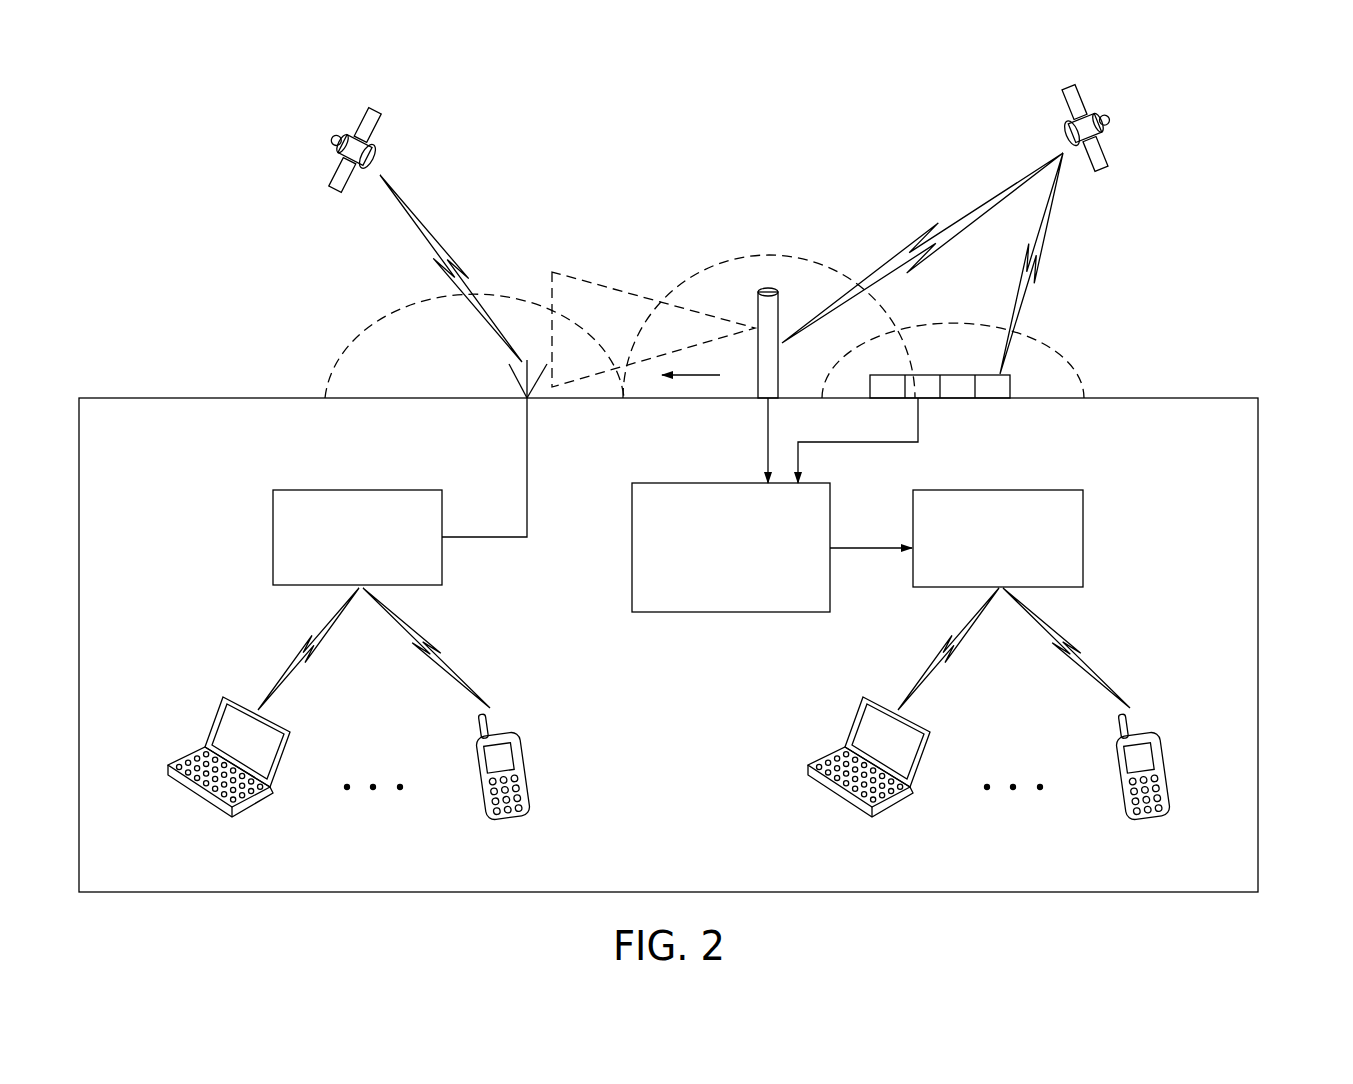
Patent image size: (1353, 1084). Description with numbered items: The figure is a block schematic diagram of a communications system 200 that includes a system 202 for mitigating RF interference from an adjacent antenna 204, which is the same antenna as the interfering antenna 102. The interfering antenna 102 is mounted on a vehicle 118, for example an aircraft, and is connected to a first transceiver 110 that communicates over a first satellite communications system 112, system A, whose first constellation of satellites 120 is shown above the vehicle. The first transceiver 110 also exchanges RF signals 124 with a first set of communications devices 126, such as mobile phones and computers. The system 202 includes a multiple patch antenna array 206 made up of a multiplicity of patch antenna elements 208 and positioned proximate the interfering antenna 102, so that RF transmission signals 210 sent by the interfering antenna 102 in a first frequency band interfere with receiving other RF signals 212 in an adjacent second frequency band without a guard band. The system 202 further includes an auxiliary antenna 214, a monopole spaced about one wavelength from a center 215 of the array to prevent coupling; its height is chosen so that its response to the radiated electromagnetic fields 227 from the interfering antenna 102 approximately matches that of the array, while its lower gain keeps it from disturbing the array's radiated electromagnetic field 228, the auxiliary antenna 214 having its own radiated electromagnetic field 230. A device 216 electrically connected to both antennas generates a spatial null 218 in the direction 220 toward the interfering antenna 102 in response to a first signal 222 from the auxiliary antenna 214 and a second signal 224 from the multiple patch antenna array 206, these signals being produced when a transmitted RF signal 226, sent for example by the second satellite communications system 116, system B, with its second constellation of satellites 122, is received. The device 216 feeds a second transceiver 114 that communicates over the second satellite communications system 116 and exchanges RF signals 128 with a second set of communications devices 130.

The communications system 200 is at (697, 466).
The vehicle 118 is at (188, 398).
The first constellation of satellites 120 is at (368, 118).
The first satellite communications system 112 is at (309, 138).
The second constellation of satellites 122 is at (1078, 92).
The second satellite communications system 116 is at (1135, 108).
The RF transmission signals 210 is at (421, 221).
The radiated electromagnetic fields 227 is at (360, 322).
The adjacent antenna 204 is at (471, 421).
The interfering antenna 102 is at (525, 395).
The spatial null 218 is at (568, 272).
The radiated electromagnetic field of auxiliary antenna 230 is at (735, 258).
The auxiliary antenna 214 is at (778, 312).
The first signal 222 is at (767, 438).
The second signal 224 is at (918, 412).
The direction to interfering antenna 220 is at (700, 377).
The transmitted RF signal 226 is at (1005, 185).
The other RF signals 212 is at (1046, 220).
The multiple patch antenna array 206 is at (986, 344).
The radiated electromagnetic field of multiple patch antenna array 228 is at (1062, 345).
The center of multiple patch antenna array 215 is at (940, 344).
The patch antenna elements 208 is at (960, 373).
The first transceiver 110 is at (273, 563).
The device to generate spatial null 216 is at (632, 540).
The system for mitigating RF interference 202 is at (735, 594).
The second transceiver 114 is at (1000, 490).
The RF signals 124 is at (296, 651).
The first set of communications devices 126 is at (214, 718).
The RF signals 128 is at (936, 651).
The second set of communications devices 130 is at (854, 718).